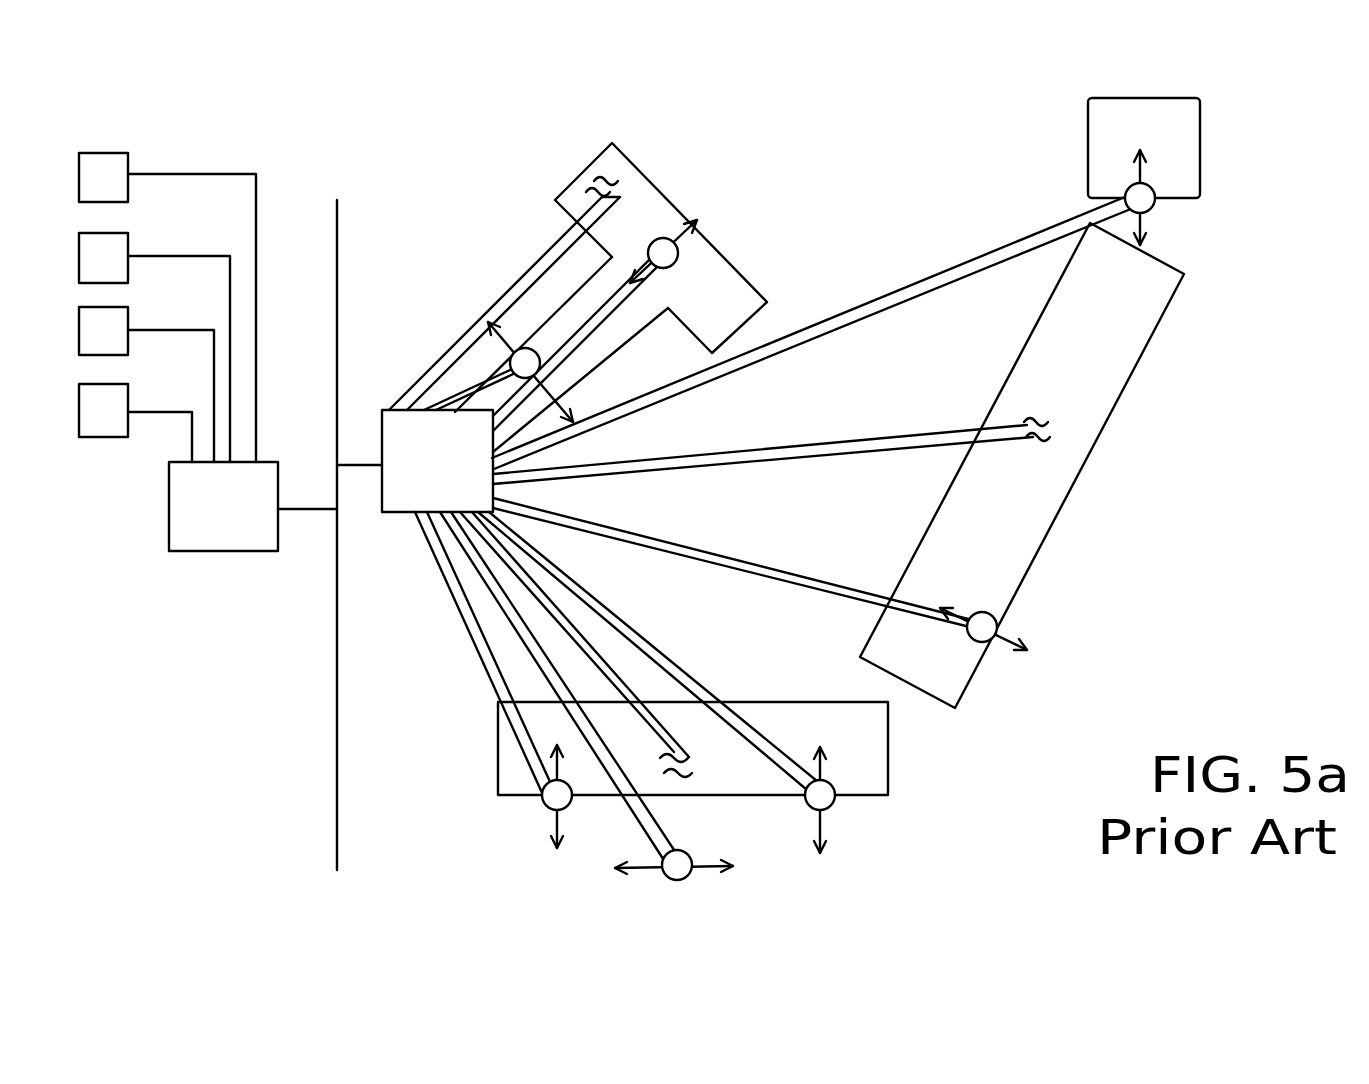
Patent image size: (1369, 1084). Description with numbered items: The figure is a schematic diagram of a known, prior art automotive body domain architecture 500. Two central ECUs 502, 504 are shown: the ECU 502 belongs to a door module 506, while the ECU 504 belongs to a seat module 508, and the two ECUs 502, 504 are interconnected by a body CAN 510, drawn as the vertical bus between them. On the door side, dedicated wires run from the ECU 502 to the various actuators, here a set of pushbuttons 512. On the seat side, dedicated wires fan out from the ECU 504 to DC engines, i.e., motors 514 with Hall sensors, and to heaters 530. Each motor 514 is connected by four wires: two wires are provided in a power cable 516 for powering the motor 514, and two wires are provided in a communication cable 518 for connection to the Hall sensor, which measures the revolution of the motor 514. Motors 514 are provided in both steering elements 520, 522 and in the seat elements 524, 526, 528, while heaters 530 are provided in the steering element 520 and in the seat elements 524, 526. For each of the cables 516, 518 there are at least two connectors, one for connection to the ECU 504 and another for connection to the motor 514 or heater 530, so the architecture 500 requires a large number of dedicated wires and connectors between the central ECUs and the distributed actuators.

The automotive body domain architecture 500 is at (217, 850).
The central ECU 502 is at (246, 534).
The central ECU 504 is at (463, 488).
The door module 506 is at (172, 658).
The seat module 508 is at (425, 720).
The body CAN 510 is at (333, 595).
The pushbuttons 512 is at (128, 183).
The motors 514 is at (527, 347).
The power cable 516 is at (937, 273).
The communication cable 518 is at (913, 297).
The steering element 520 is at (755, 290).
The steering element 522 is at (665, 310).
The seat element 524 is at (888, 757).
The seat element 526 is at (1060, 512).
The seat element 528 is at (1088, 122).
The heaters 530 is at (620, 195).